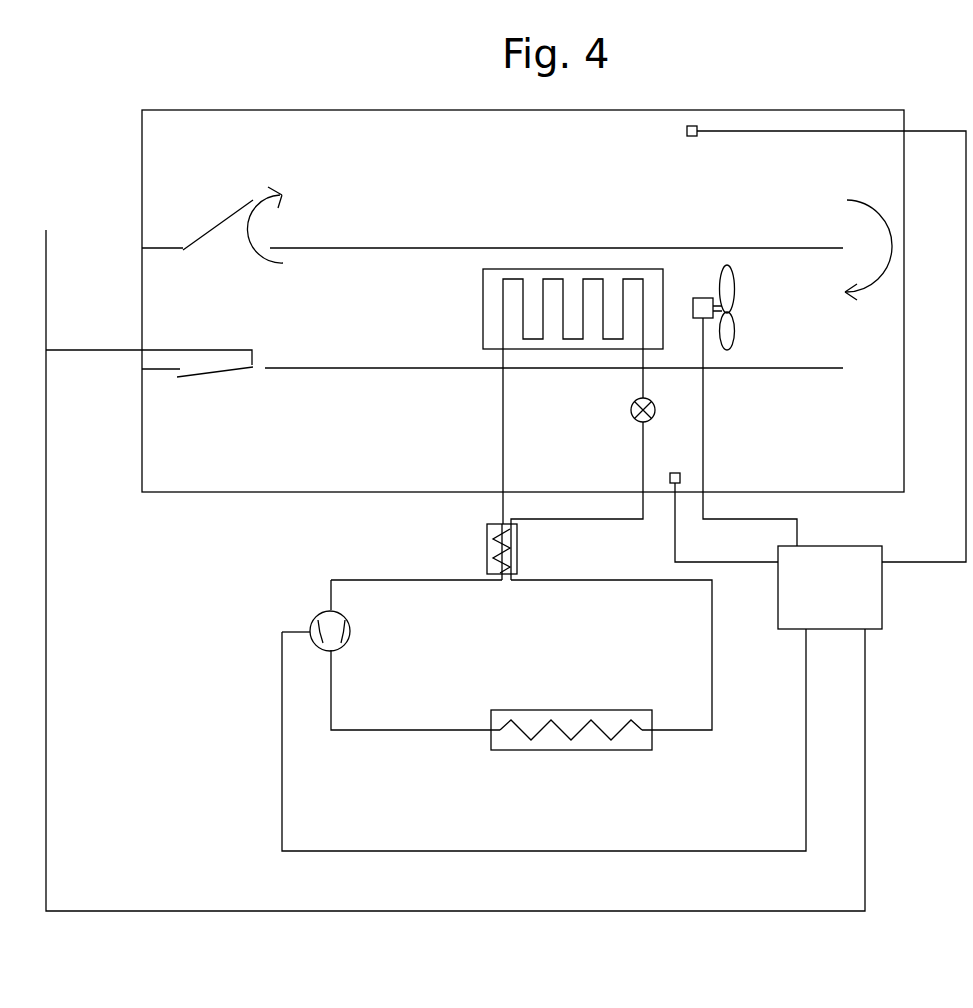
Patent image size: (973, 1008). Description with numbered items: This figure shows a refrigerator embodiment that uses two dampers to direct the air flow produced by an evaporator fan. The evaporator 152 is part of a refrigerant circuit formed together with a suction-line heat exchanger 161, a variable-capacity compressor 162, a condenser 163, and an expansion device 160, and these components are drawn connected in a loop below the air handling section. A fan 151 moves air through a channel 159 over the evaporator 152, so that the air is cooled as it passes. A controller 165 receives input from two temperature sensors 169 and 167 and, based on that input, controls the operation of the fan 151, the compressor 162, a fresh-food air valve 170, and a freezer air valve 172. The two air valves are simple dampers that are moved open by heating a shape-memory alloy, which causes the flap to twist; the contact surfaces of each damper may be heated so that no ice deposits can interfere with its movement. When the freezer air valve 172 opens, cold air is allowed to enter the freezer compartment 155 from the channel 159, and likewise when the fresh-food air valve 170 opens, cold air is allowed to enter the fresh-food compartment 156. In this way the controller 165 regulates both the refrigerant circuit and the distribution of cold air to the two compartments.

The fan 151 is at (726, 328).
The evaporator 152 is at (500, 330).
The freezer compartment 155 is at (492, 214).
The fresh-food compartment 156 is at (293, 408).
The channel 159 is at (554, 337).
The expansion device 160 is at (647, 423).
The suction-line heat exchanger 161 is at (491, 550).
The variable-capacity compressor 162 is at (350, 640).
The condenser 163 is at (532, 708).
The controller 165 is at (830, 587).
The temperature sensor 167 is at (811, 344).
The temperature sensor 169 is at (680, 473).
The fresh-food air valve 170 is at (220, 370).
The freezer air valve 172 is at (236, 214).